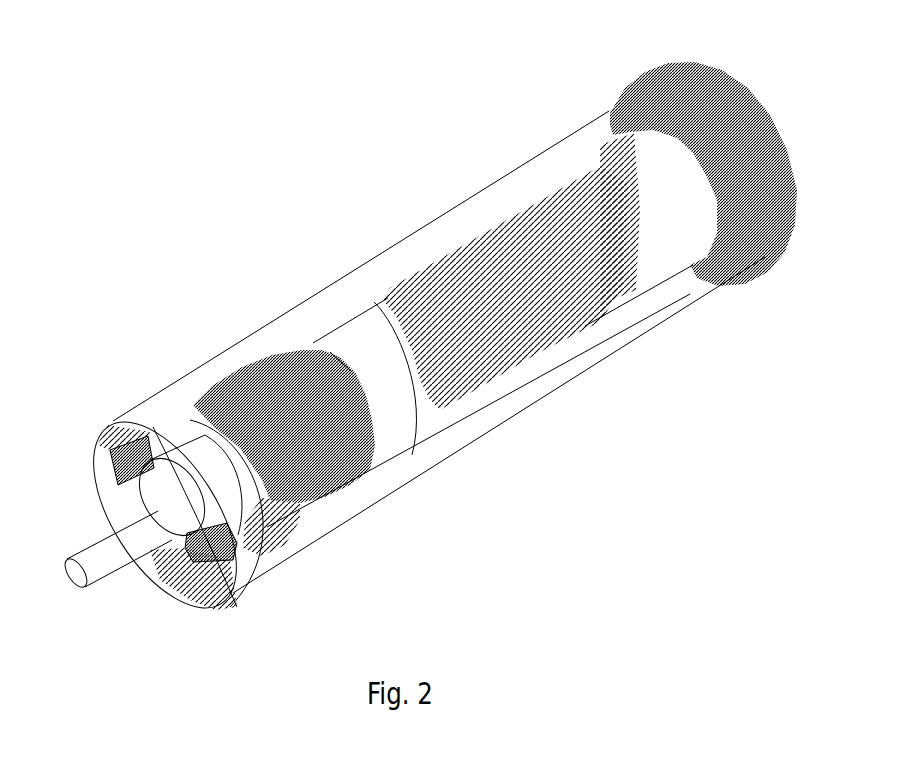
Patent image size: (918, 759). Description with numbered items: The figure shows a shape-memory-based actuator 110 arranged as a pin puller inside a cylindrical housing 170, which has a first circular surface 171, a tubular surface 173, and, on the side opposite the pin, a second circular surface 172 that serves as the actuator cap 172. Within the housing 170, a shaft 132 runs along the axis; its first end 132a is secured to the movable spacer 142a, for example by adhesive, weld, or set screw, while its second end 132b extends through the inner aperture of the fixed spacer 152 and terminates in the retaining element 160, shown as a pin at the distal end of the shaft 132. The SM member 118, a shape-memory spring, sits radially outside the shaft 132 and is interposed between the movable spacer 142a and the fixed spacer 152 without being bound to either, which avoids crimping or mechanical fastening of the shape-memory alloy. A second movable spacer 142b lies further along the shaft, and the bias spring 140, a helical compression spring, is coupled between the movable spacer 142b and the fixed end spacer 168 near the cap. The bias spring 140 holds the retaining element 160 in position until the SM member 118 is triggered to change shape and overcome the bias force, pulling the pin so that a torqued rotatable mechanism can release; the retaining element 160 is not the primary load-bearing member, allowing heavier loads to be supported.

The SM-based actuator 110 is at (606, 451).
The SM member 118 is at (333, 460).
The shaft 132 is at (277, 445).
The first end of shaft 132a is at (330, 390).
The second end of shaft 132b is at (100, 535).
The bias spring 140 is at (470, 257).
The movable spacer 142a is at (332, 337).
The movable spacer 142b is at (373, 317).
The fixed spacer 152 is at (190, 437).
The retaining element 160 is at (102, 560).
The fixed end spacer 168 is at (665, 250).
The housing 170 is at (587, 107).
The first circular surface 171 is at (100, 463).
The second circular surface 172 is at (733, 95).
The tubular surface 173 is at (533, 165).